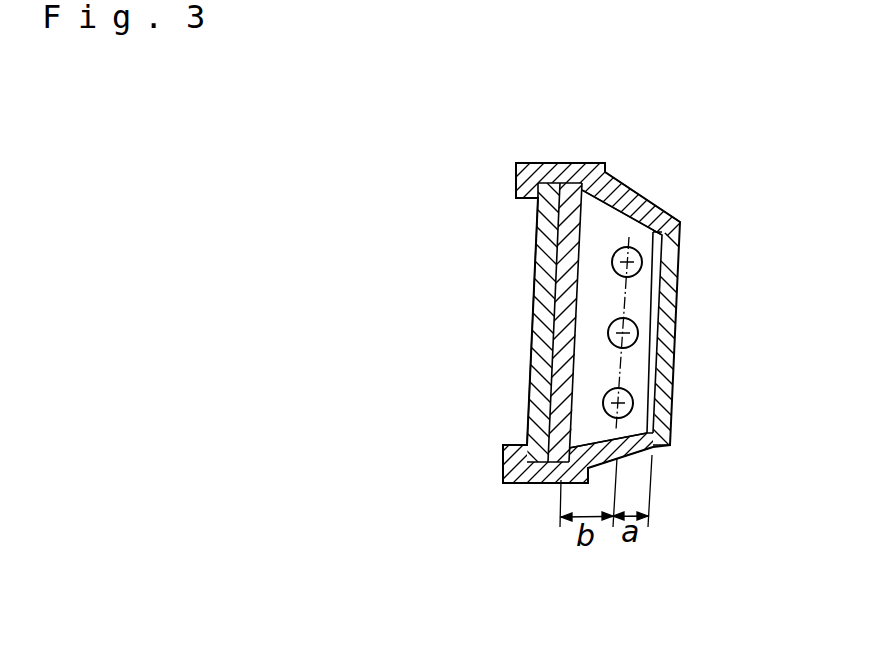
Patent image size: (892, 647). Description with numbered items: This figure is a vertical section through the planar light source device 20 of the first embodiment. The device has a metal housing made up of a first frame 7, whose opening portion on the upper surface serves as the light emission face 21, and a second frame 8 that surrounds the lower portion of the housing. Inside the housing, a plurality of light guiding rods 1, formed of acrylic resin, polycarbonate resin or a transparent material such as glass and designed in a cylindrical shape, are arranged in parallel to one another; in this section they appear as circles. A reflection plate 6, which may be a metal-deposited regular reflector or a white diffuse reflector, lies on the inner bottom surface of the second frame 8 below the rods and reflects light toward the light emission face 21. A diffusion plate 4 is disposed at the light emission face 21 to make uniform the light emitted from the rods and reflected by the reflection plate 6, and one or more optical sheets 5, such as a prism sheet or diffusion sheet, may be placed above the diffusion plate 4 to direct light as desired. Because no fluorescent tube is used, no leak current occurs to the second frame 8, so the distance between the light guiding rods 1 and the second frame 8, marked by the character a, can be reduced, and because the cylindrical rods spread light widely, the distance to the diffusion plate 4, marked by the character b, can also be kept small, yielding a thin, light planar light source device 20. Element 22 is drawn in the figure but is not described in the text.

The light guiding rod 1 is at (628, 247).
The diffusion plate 4 is at (571, 190).
The optical sheet 5 is at (552, 188).
The reflection plate 6 is at (672, 216).
The first frame 7 is at (503, 483).
The second frame 8 is at (672, 437).
The planar light source device 20 is at (698, 253).
The light emission face 21 is at (512, 312).
The right wall 22 is at (672, 318).